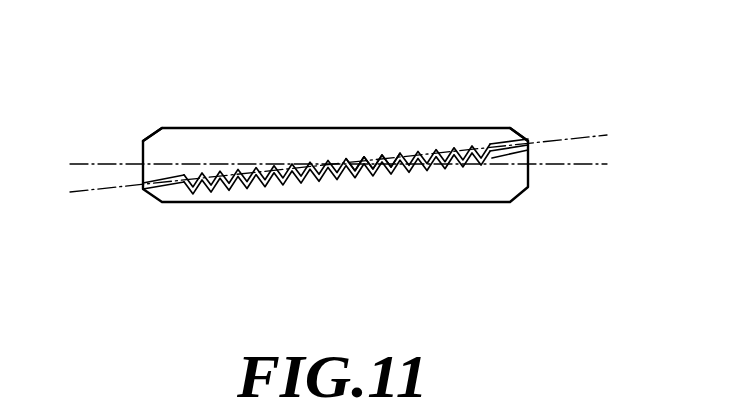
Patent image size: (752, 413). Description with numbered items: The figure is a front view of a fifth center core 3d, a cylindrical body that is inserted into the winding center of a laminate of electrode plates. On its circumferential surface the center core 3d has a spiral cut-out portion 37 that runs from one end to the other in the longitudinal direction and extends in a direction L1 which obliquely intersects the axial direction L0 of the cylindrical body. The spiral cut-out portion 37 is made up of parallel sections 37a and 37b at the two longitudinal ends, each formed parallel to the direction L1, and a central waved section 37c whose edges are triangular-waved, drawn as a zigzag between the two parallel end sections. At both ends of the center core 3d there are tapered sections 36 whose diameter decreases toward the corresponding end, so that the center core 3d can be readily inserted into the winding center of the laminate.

The fifth center core 3d is at (449, 127).
The tapered section 36 is at (158, 129).
The spiral cut-out portion 37 is at (311, 180).
The parallel section 37a is at (160, 205).
The parallel section 37b is at (503, 165).
The central waved section 37c is at (383, 163).
The direction of the spiral cut-out portion L1 is at (580, 138).
The axial direction L0 is at (581, 166).